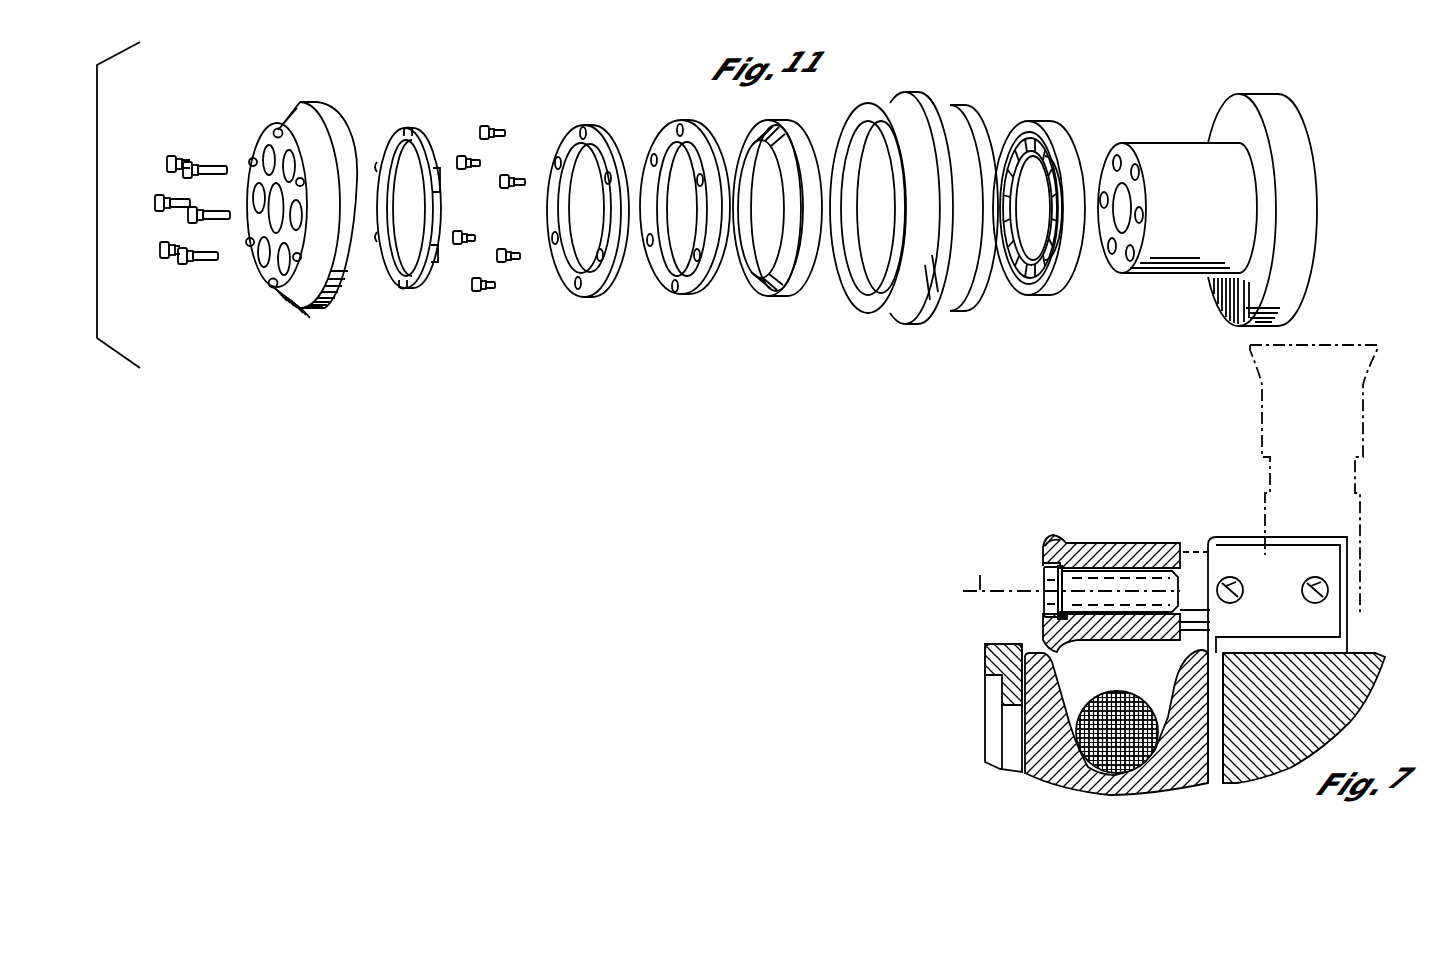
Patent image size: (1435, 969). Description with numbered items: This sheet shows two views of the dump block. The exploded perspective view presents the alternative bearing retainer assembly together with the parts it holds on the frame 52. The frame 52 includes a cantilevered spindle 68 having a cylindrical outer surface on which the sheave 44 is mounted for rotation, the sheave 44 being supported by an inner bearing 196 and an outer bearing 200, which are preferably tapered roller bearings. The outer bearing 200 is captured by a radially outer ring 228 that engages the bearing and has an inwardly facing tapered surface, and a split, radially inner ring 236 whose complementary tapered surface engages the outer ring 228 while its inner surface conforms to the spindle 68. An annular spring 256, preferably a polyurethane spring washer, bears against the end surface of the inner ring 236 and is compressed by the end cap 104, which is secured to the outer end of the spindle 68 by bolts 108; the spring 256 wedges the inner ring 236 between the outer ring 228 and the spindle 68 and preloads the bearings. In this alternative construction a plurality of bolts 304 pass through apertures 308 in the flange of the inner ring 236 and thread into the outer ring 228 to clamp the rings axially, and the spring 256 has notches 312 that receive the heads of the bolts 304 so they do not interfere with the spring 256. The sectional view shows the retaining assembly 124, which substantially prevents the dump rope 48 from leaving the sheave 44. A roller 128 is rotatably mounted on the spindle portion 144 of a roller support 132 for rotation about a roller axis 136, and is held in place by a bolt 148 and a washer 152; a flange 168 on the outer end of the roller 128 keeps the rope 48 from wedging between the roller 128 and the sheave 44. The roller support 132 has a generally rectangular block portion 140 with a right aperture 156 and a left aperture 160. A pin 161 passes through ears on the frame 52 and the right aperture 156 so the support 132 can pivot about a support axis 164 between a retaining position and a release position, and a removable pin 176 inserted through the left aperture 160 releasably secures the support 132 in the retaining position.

In FIG. 11, the end cap 104 is at (290, 123).
In FIG. 11, the bolts 108 is at (218, 162).
In FIG. 11, the notches or cut-outs 312 is at (374, 150).
In FIG. 11, the annular spring 256 is at (430, 140).
In FIG. 11, the bolts 304 is at (510, 247).
In FIG. 11, the inner ring 236 is at (573, 125).
In FIG. 11, the apertures 308 is at (555, 245).
In FIG. 11, the outer ring 228 is at (681, 293).
In FIG. 11, the outer bearing 200 is at (788, 301).
In FIG. 11, the sheave 44 is at (906, 341).
In FIG. 11, the inner bearing 196 is at (1051, 305).
In FIG. 11, the spindle 68 is at (1190, 257).
In FIG. 7, the retaining assembly 124 is at (1077, 543).
In FIG. 7, the roller 128 is at (1133, 543).
In FIG. 7, the flange 168 is at (1048, 535).
In FIG. 7, the spindle portion 144 is at (1150, 571).
In FIG. 7, the roller axis 136 is at (1042, 578).
In FIG. 7, the bolt 148 is at (1045, 568).
In FIG. 7, the washer 152 is at (1050, 618).
In FIG. 7, the roller support 132 is at (1311, 641).
In FIG. 7, the block portion 140 is at (1330, 618).
In FIG. 7, the left aperture 160 is at (1243, 585).
In FIG. 7, the support axis 164 is at (1313, 579).
In FIG. 7, the pin 176 is at (1232, 580).
In FIG. 7, the pin 161 is at (1305, 600).
In FIG. 7, the right aperture 156 is at (1328, 592).
In FIG. 7, the dump rope 48 is at (1140, 698).
In FIG. 7, the frame 52 is at (1345, 684).